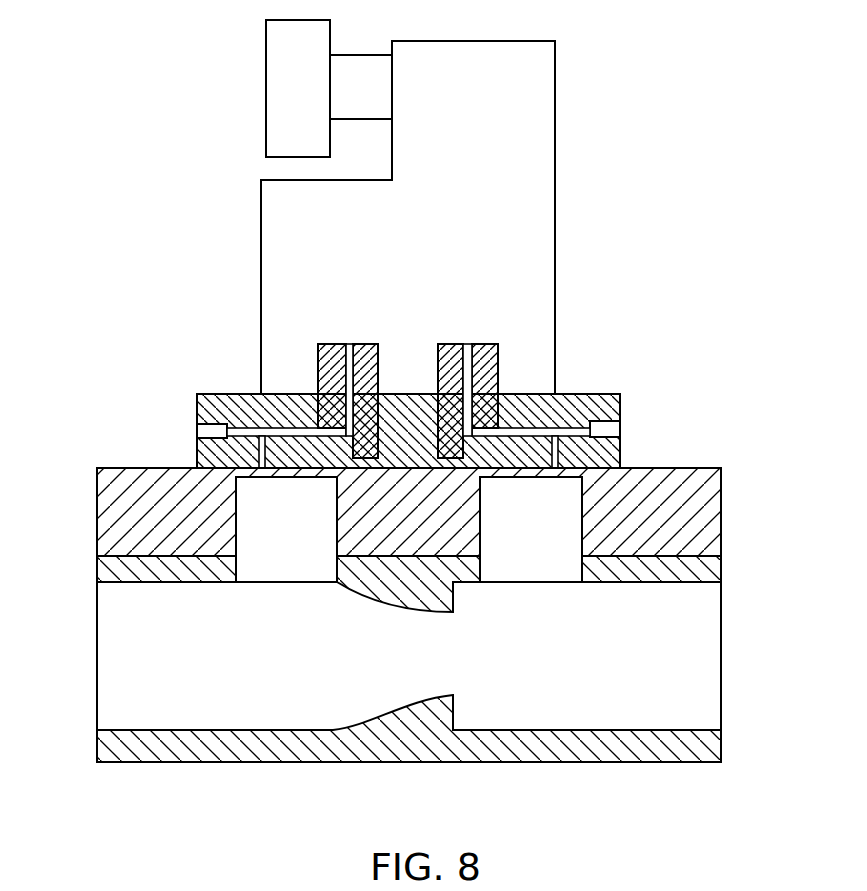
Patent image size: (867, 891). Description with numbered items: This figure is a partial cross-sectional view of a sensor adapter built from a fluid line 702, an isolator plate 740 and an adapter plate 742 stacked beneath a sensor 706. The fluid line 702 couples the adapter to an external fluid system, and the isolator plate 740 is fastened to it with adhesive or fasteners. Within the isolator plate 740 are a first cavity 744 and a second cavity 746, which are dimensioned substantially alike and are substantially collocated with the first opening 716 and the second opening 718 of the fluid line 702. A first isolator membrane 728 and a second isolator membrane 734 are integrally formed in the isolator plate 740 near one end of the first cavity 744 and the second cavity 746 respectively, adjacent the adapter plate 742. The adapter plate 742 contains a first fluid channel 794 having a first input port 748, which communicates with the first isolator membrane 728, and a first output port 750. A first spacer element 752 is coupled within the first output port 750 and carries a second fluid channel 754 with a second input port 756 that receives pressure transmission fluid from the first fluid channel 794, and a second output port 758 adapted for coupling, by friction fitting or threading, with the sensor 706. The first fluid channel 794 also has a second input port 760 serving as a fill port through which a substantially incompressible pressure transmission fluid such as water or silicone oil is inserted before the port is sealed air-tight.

The sensor 706 is at (555, 228).
The fluid line 702 is at (363, 615).
The isolator plate 740 is at (215, 394).
The adapter plate 742 is at (191, 394).
The first opening 716 is at (261, 573).
The second opening 718 is at (557, 572).
The first cavity 744 is at (307, 535).
The second cavity 746 is at (521, 528).
The first isolator membrane 728 is at (234, 474).
The second isolator membrane 734 is at (582, 475).
The first input port 748 is at (265, 478).
The first fluid channel 794 is at (313, 469).
The first output port 750 is at (318, 392).
The first spacer element 752 is at (322, 344).
The second fluid channel 754 is at (383, 372).
The second input port 756 is at (306, 418).
The second output port 758 is at (352, 344).
The second input port (fill port) 760 is at (243, 408).